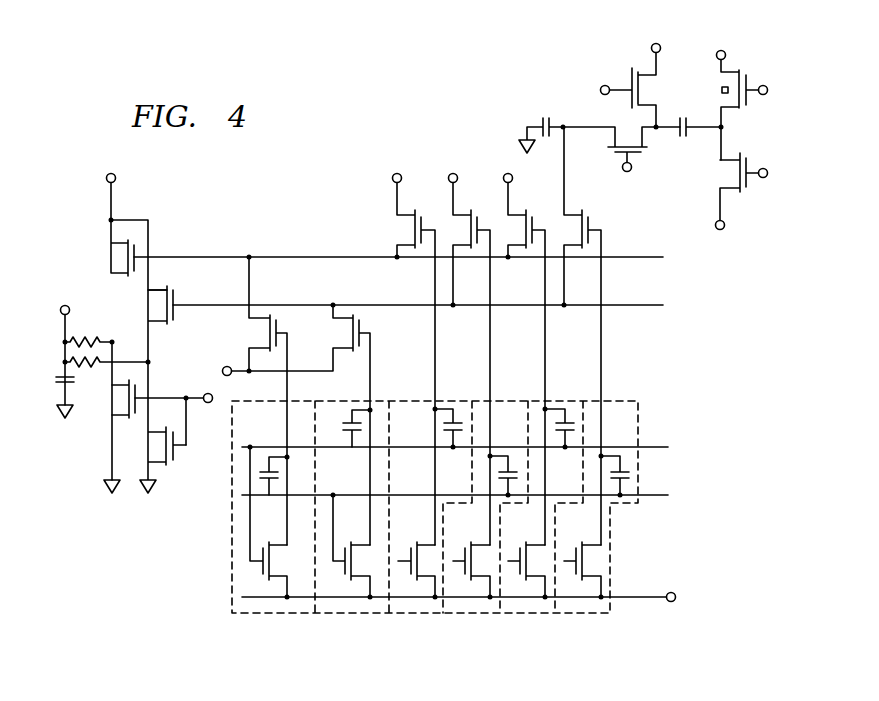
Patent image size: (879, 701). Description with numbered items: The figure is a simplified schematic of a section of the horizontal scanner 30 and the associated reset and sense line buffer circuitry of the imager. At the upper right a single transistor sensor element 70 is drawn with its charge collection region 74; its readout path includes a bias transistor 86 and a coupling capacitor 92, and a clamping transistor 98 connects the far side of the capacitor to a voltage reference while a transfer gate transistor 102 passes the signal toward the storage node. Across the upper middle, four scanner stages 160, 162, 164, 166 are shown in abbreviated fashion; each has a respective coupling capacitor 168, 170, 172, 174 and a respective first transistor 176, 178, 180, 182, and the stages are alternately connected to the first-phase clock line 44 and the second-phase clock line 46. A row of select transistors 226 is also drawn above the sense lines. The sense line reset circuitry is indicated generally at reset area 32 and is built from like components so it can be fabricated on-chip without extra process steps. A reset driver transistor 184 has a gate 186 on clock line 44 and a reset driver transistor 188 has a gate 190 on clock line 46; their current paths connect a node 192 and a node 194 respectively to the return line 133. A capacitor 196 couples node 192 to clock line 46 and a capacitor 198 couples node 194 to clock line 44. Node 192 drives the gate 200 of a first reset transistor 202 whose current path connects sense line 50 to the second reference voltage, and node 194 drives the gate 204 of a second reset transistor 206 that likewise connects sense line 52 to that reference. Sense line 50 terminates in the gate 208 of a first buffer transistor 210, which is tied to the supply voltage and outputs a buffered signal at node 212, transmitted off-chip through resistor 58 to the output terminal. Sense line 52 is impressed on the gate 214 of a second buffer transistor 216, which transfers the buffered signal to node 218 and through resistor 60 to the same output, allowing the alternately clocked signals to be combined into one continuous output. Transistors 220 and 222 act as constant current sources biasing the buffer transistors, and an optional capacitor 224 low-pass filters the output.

The scanner 30 is at (637, 410).
The reset area 32 is at (230, 620).
The φ1 clock line 44 is at (255, 443).
The φ2 clock line 46 is at (247, 497).
The sense line 50 is at (322, 256).
The sense line 52 is at (342, 303).
The resistor 58 is at (90, 338).
The resistor 60 is at (82, 367).
The sensor element 70 is at (753, 72).
The charge collection region 74 is at (722, 90).
The bias transistor 86 is at (744, 151).
The coupling capacitor 92 is at (682, 138).
The clamping transistor 98 is at (633, 70).
The transfer gate transistor 102 is at (616, 151).
The VSS return line 133 is at (303, 613).
The scanner stage 160 is at (416, 612).
The scanner stage 162 is at (473, 612).
The scanner stage 164 is at (536, 612).
The scanner stage 166 is at (584, 613).
The coupling capacitor 168 is at (458, 418).
The coupling capacitor 170 is at (508, 466).
The coupling capacitor 172 is at (563, 418).
The coupling capacitor 174 is at (620, 466).
The first transistor 176 is at (404, 555).
The first transistor 178 is at (457, 555).
The first transistor 180 is at (512, 555).
The first transistor 182 is at (567, 555).
The reset driver transistor 184 is at (275, 584).
The gate 186 is at (260, 562).
The reset driver transistor 188 is at (360, 583).
The gate 190 is at (342, 556).
The node 192 is at (286, 455).
The node 194 is at (376, 414).
The capacitor 196 is at (258, 477).
The capacitor 198 is at (350, 442).
The gate 200 is at (279, 333).
The first reset transistor 202 is at (262, 316).
The gate 204 is at (362, 330).
The second reset transistor 206 is at (349, 333).
The gate 208 is at (147, 244).
The first buffer transistor 210 is at (119, 255).
The node 212 is at (112, 340).
The gate 214 is at (176, 303).
The second buffer transistor 216 is at (164, 280).
The node 218 is at (152, 376).
The transistor 220 is at (120, 404).
The transistor 222 is at (174, 461).
The capacitor 224 is at (58, 410).
The select transistors 226 is at (412, 226).